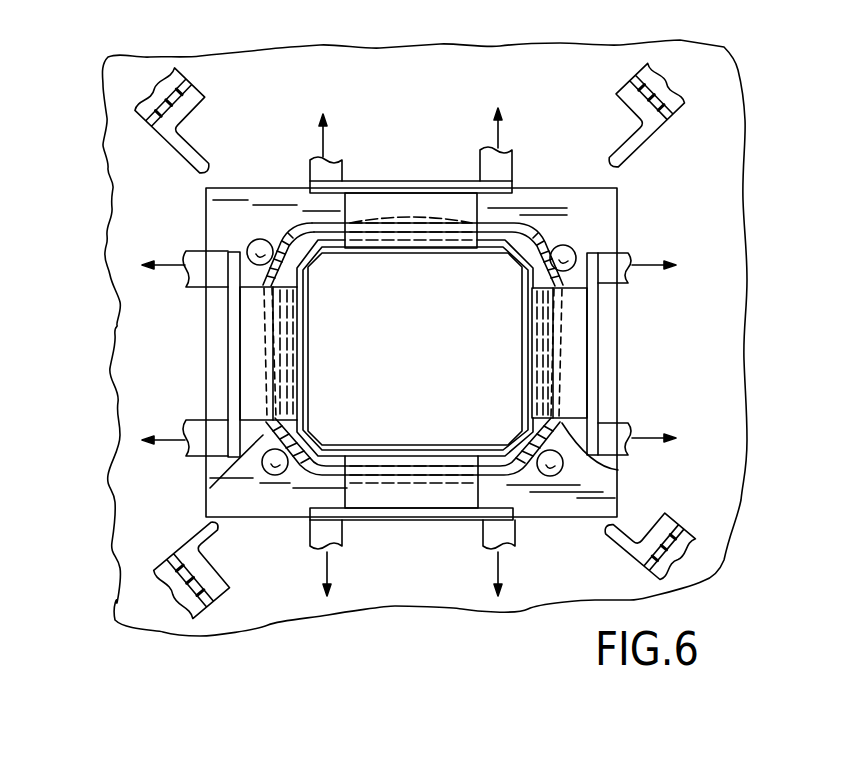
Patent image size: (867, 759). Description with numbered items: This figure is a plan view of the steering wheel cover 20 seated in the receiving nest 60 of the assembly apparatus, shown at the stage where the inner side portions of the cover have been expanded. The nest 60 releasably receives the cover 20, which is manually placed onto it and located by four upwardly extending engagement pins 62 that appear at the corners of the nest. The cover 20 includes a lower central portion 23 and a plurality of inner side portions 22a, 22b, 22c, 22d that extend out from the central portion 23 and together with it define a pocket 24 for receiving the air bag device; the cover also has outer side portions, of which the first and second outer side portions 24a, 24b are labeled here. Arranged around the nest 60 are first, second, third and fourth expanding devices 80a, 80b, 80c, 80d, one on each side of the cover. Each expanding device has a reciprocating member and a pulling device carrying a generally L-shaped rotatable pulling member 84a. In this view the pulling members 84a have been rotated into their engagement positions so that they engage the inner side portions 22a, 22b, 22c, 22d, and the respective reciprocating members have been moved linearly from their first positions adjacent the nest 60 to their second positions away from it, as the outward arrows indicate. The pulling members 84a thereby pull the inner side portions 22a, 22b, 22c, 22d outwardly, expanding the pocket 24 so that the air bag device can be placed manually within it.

The steering wheel cover 20 is at (514, 236).
The inner side portion 22a is at (540, 262).
The inner side portion 22b is at (490, 458).
The inner side portion 22c is at (262, 437).
The inner side portion 22d is at (487, 245).
The lower central portion 23 is at (500, 340).
The pocket 24 is at (480, 392).
The first outer side portion 24a is at (570, 448).
The second outer side portion 24b is at (497, 479).
The receiving nest 60 is at (607, 487).
The engagement pin 62 is at (262, 239).
The first expanding device 80a is at (690, 302).
The second expanding device 80b is at (427, 560).
The third expanding device 80c is at (146, 313).
The fourth expanding device 80d is at (456, 137).
The pulling member 84a is at (402, 203).